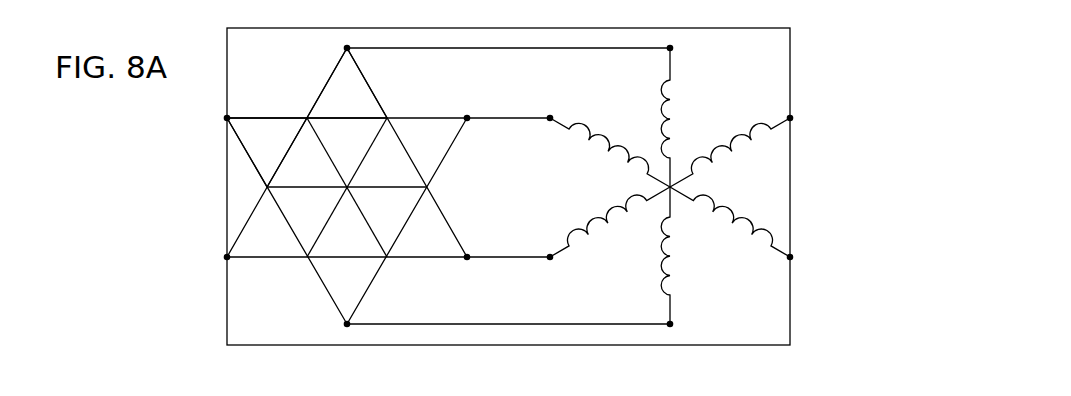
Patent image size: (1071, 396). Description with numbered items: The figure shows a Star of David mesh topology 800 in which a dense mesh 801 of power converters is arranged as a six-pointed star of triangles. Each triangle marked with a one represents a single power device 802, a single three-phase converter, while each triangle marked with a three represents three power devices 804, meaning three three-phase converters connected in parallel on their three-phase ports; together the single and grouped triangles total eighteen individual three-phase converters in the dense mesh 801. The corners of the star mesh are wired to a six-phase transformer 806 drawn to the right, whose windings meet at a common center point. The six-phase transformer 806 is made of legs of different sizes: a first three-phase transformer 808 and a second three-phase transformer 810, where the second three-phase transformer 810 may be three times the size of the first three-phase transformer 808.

The power converter circuit 800 is at (93, 143).
The dense mesh 801 is at (216, 211).
The single power device 802 is at (250, 127).
The three power devices 804 is at (347, 70).
The six-phase transformer 806 is at (747, 207).
The first three-phase transformer 808 is at (565, 128).
The second three-phase transformer 810 is at (567, 247).